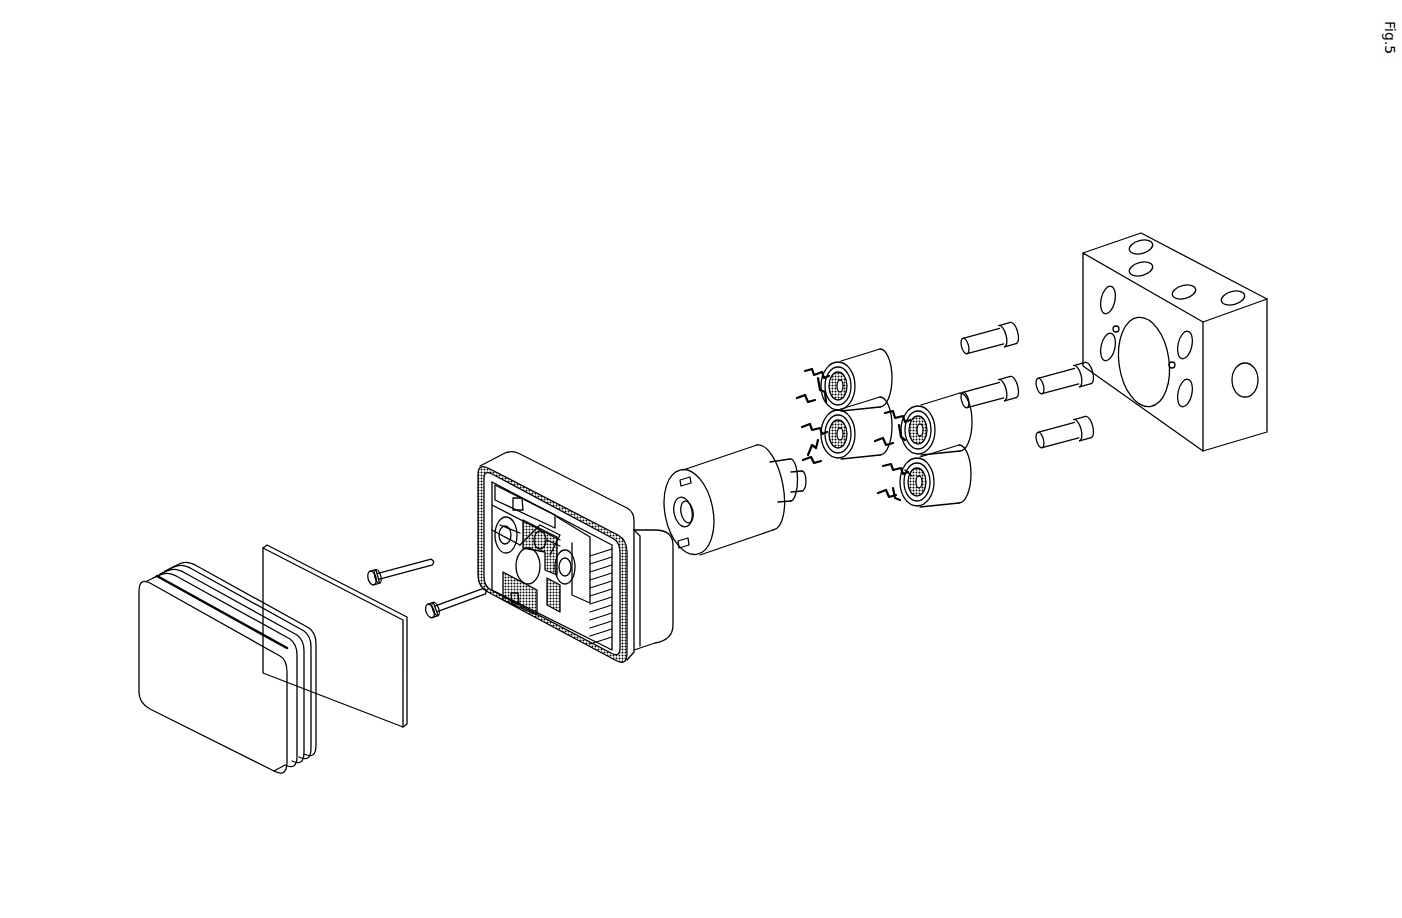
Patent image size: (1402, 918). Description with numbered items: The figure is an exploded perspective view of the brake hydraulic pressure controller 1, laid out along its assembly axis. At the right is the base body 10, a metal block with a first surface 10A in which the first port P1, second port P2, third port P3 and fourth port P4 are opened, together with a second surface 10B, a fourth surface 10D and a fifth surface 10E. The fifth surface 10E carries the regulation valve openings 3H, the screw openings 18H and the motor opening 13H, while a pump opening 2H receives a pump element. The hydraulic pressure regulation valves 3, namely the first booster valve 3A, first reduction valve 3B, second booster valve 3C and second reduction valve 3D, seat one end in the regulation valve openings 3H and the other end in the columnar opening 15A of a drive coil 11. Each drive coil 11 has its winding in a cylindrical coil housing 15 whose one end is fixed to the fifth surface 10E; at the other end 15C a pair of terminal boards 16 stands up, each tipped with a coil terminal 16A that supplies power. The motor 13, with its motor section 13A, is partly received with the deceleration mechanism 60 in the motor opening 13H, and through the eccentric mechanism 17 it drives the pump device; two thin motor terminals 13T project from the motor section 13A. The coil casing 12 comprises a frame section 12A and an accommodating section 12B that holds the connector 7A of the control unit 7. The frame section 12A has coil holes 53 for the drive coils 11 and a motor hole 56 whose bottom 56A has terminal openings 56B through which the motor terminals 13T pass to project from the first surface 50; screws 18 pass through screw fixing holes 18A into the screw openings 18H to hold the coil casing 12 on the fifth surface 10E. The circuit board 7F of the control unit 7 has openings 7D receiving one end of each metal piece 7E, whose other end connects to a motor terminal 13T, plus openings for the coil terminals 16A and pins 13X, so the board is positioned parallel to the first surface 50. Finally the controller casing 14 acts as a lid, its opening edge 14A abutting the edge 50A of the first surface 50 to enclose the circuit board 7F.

The brake hydraulic pressure controller 1 is at (772, 222).
The controller casing 14 is at (246, 688).
The opening edge 14A is at (314, 743).
The circuit board 7F is at (350, 643).
The control unit 7 is at (333, 584).
The opening 7D is at (334, 606).
The screw 18 is at (412, 560).
The screw fixing hole 18A is at (500, 530).
The coil casing 12 is at (559, 559).
The frame section 12A is at (538, 455).
The accommodating section 12B is at (662, 642).
The connector 7A is at (528, 559).
The metal piece 7E is at (545, 490).
The pin 13X is at (498, 497).
The motor hole 56 is at (517, 542).
The bottom 56A is at (510, 560).
The terminal opening 56B is at (547, 500).
The first surface 50 is at (518, 514).
The edge 50A is at (545, 530).
The coil hole 53 is at (505, 490).
The motor 13 is at (725, 509).
The motor section 13A is at (720, 553).
The motor terminal 13T is at (690, 578).
The eccentric mechanism 17 is at (800, 495).
The deceleration mechanism 60 is at (790, 528).
The drive coil 11 is at (868, 350).
The coil housing 15 is at (893, 430).
The columnar opening 15A is at (906, 490).
The other end 15C is at (838, 370).
The terminal board 16 is at (830, 372).
The coil terminal 16A is at (820, 370).
The hydraulic pressure regulation valve 3 is at (1005, 381).
The first booster valve 3A is at (995, 330).
The first reduction valve 3B is at (985, 385).
The second booster valve 3C is at (1065, 378).
The second reduction valve 3D is at (1075, 440).
The base body 10 is at (1193, 339).
The first surface 10A is at (1092, 250).
The second surface 10B is at (1258, 440).
The fourth surface 10D is at (1225, 445).
The fifth surface 10E is at (1198, 450).
The first port P1 is at (1145, 245).
The second port P2 is at (1245, 298).
The third port P3 is at (1148, 268).
The fourth port P4 is at (1198, 292).
The regulation valve opening 3H is at (1100, 342).
The screw opening 18H is at (1116, 326).
The motor opening 13H is at (1160, 378).
The pump opening 2H is at (1257, 380).